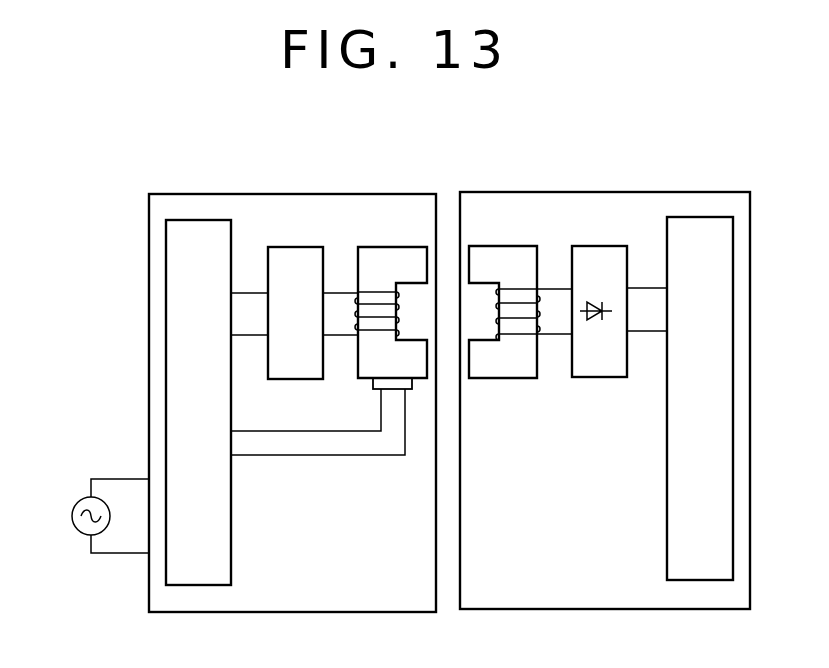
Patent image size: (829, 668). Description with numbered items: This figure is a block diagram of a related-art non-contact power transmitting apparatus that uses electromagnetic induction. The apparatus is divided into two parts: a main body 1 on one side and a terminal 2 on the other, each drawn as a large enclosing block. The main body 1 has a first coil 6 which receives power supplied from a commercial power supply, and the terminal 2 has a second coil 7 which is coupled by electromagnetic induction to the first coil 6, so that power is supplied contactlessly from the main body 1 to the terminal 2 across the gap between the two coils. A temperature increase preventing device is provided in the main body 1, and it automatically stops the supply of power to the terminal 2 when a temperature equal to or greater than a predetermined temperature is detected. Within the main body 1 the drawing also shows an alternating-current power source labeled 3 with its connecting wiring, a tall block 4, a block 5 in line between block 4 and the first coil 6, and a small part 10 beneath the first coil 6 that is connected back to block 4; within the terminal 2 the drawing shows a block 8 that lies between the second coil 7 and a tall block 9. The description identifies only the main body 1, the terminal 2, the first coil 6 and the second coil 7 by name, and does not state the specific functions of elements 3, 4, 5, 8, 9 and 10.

The main body 1 is at (326, 194).
The terminal 2 is at (505, 192).
The AC power source 3 is at (74, 501).
The control unit 4 is at (199, 220).
The power transmission circuit 5 is at (295, 247).
The first coil 6 is at (380, 247).
The second coil 7 is at (498, 246).
The rectifier circuit 8 is at (598, 246).
The load / battery 9 is at (681, 217).
The detection unit 10 is at (408, 389).